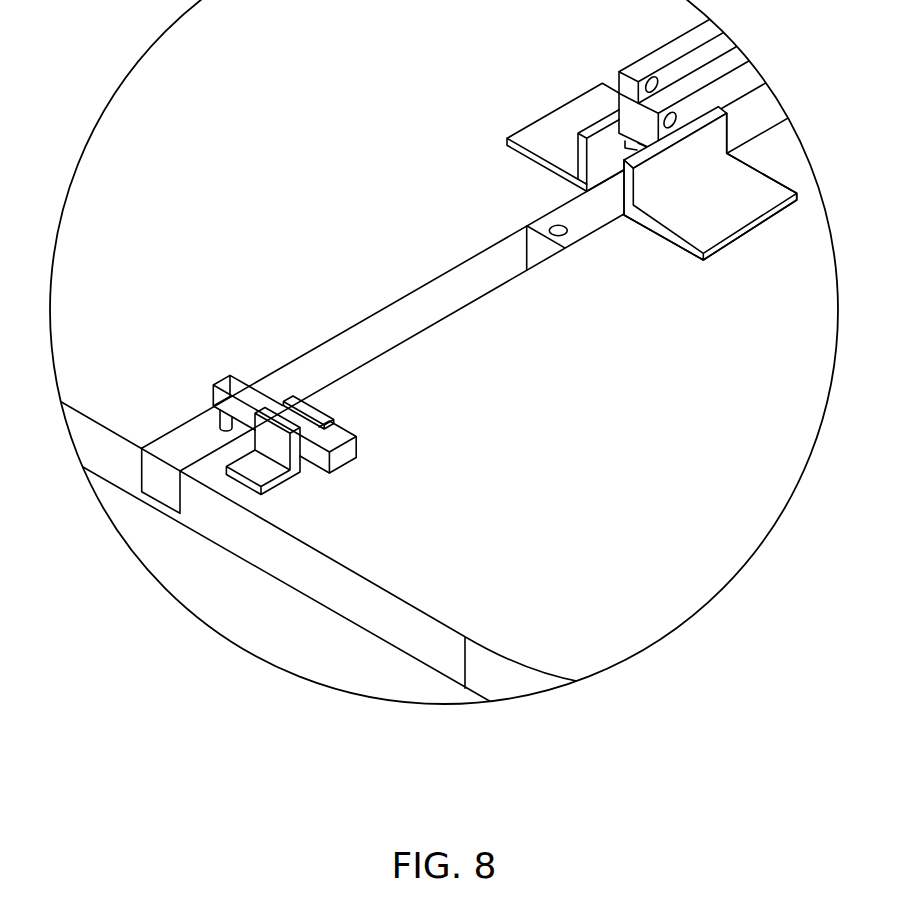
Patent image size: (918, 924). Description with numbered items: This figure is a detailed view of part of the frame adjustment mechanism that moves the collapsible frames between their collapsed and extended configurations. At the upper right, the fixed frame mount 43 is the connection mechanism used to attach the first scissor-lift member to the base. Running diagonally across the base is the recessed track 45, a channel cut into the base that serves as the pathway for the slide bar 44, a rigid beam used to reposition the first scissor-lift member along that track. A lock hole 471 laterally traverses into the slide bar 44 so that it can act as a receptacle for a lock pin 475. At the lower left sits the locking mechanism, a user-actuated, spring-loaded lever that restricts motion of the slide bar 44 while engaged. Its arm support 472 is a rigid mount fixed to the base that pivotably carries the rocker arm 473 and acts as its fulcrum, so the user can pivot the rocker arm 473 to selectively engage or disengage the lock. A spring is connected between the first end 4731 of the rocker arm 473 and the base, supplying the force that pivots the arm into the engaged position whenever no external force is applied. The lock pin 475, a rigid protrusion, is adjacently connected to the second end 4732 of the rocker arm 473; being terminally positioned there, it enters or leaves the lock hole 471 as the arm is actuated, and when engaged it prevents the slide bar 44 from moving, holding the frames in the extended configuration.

The fixed frame mount 43 is at (548, 126).
The slide bar 44 is at (587, 228).
The recessed track 45 is at (389, 324).
The lock hole 471 is at (557, 228).
The arm support 472 is at (273, 488).
The rocker arm 473 is at (286, 400).
The first end 4731 is at (340, 458).
The second end 4732 is at (230, 385).
The lock pin 475 is at (210, 412).